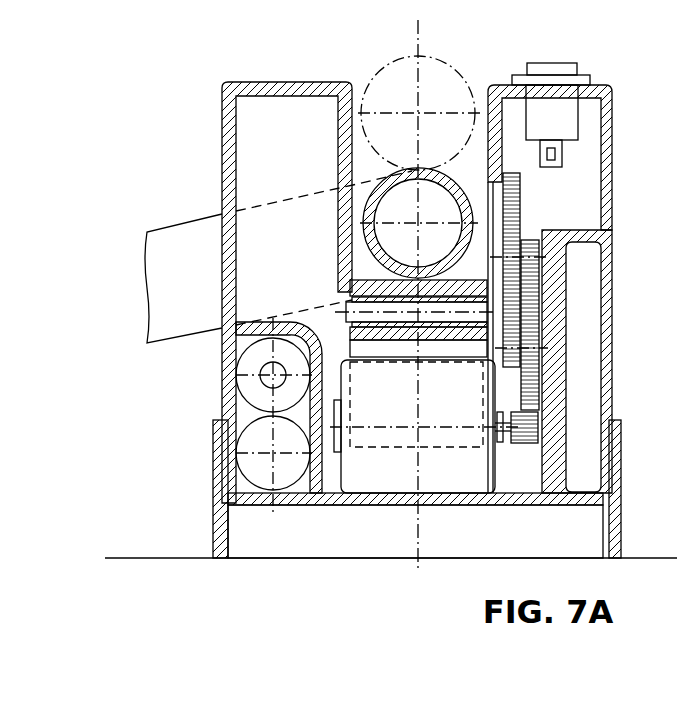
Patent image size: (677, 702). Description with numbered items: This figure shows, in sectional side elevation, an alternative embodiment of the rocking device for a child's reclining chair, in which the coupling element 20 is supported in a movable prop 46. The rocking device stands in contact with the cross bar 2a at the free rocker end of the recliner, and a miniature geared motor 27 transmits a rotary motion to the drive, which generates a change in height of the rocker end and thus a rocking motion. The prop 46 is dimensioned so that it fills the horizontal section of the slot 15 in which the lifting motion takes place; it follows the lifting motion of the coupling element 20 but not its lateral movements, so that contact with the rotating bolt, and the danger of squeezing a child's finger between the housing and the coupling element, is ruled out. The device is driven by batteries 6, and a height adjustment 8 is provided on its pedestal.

The cross bar 2a is at (435, 168).
The slot 15 is at (363, 165).
The movable prop 46 is at (360, 282).
The coupling element 20 is at (380, 318).
The miniature geared motor 27 is at (477, 478).
The batteries 6 is at (282, 475).
The height adjustment 8 is at (612, 458).